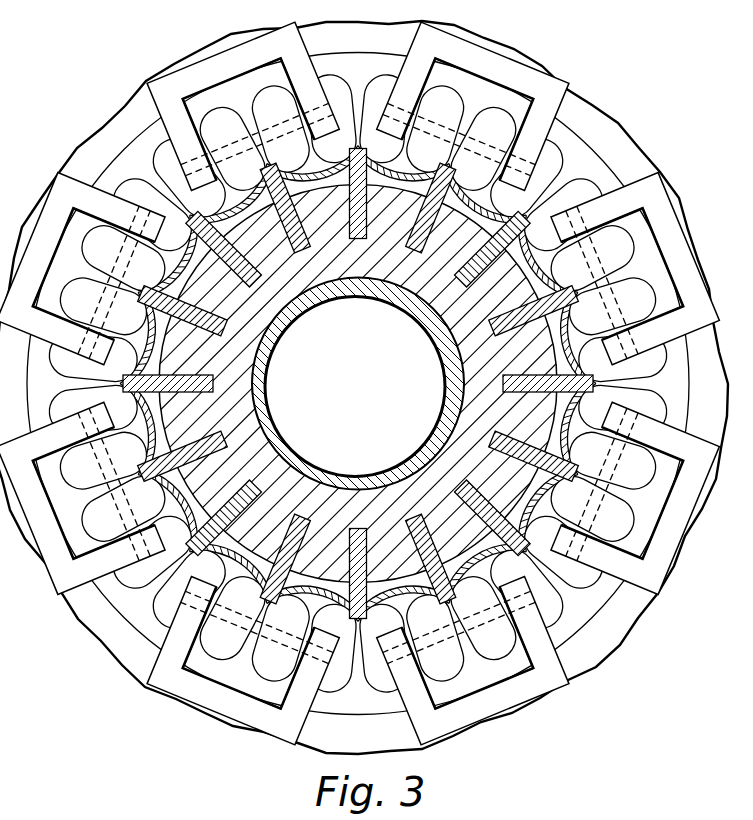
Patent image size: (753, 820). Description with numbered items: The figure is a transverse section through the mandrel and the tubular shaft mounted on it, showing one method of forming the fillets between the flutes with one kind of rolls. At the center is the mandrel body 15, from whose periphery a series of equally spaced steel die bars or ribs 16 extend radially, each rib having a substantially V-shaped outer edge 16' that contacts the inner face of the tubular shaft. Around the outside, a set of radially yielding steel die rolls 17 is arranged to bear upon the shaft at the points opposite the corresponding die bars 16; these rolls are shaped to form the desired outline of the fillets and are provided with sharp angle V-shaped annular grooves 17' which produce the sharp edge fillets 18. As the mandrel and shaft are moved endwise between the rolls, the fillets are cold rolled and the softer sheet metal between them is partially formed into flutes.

The mandrel body 15 is at (286, 461).
The die bar 16 is at (564, 552).
The V-shaped outer edge 16' is at (493, 531).
The die roll 17 is at (542, 199).
The V-shaped annular groove 17' is at (465, 105).
The sharp edge fillet 18 is at (528, 185).